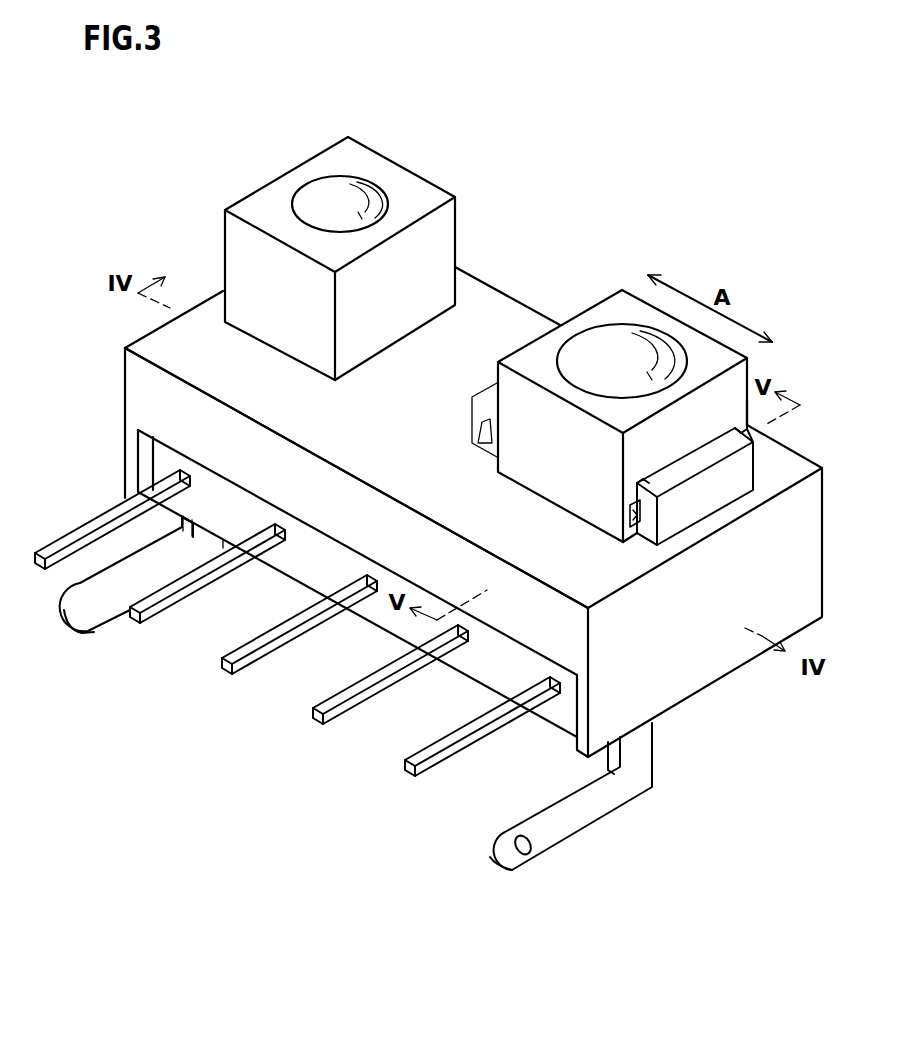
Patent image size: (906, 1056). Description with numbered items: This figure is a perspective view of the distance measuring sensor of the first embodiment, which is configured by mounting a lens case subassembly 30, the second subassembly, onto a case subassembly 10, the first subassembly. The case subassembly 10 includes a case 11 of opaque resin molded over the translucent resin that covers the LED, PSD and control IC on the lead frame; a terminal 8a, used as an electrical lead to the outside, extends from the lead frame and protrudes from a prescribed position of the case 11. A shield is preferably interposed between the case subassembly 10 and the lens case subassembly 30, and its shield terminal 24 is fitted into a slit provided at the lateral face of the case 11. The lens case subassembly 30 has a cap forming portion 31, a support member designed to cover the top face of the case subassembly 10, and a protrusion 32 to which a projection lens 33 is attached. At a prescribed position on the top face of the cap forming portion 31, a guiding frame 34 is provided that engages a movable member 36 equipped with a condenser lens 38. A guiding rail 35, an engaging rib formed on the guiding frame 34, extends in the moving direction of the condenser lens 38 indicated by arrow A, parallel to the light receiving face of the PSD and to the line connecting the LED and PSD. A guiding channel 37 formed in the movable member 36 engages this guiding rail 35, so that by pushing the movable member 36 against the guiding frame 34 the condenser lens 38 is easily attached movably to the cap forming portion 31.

The lens case subassembly 30 is at (483, 232).
The cap forming portion 31 is at (152, 397).
The protrusion 32 is at (340, 238).
The projection lens 33 is at (333, 203).
The guiding frame 34 is at (730, 482).
The guiding rail 35 is at (633, 512).
The movable member 36 is at (609, 389).
The guiding channel 37 is at (657, 527).
The condenser lens 38 is at (605, 353).
The shield terminal 24 is at (95, 610).
The case 11 is at (305, 562).
The case subassembly 10 is at (303, 665).
The terminal 8a is at (416, 757).